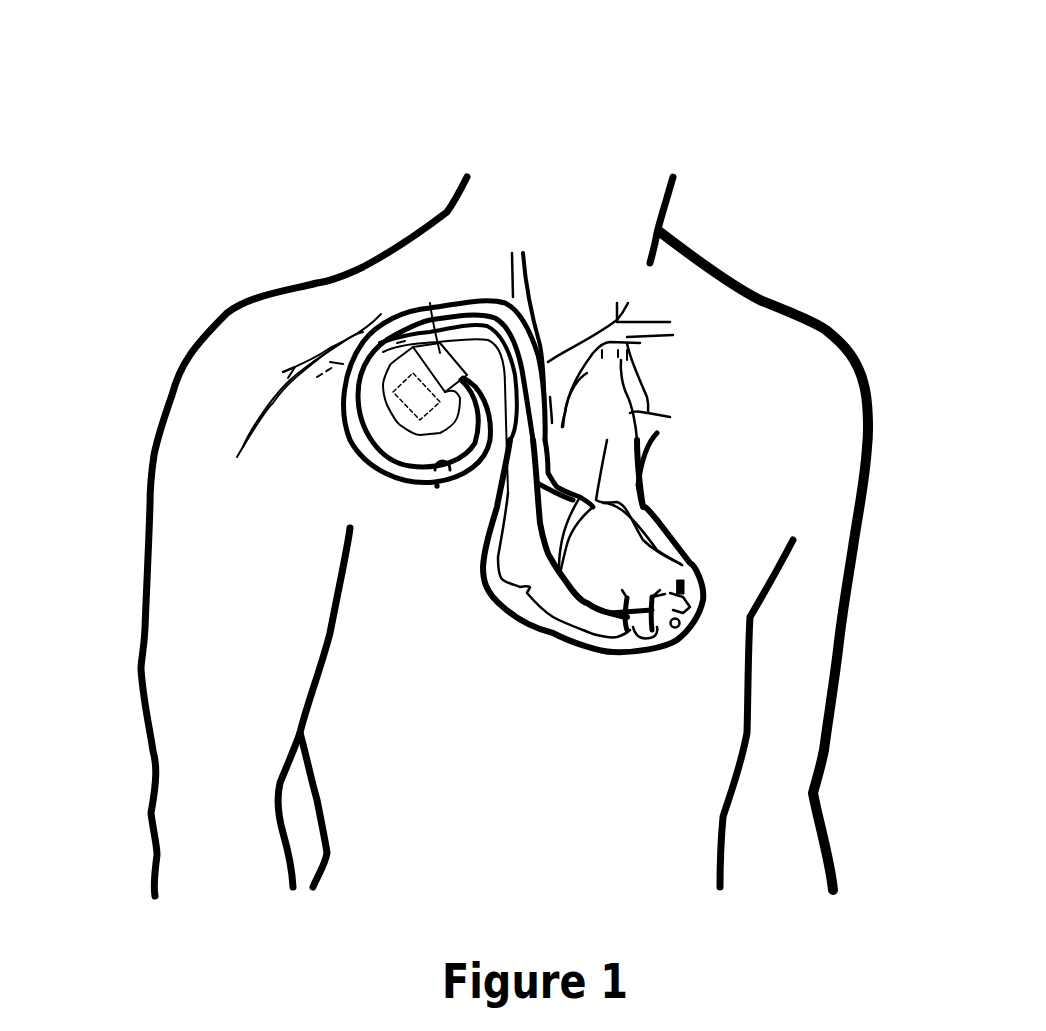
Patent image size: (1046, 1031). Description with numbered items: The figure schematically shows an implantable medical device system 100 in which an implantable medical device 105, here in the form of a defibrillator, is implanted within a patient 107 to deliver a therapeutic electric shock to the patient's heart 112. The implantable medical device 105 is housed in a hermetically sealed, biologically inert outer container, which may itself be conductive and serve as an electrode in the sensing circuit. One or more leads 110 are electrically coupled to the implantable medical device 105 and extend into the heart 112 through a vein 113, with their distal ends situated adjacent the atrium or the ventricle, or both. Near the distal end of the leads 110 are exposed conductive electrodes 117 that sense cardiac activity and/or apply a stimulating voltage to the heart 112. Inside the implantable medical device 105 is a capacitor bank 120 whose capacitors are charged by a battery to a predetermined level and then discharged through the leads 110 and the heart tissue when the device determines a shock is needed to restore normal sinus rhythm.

The implantable medical device system 100 is at (585, 138).
The implantable medical device 105 is at (397, 422).
The patient 107 is at (823, 333).
The leads 110 is at (440, 488).
The heart 112 is at (636, 652).
The vein 113 is at (355, 340).
The electrodes 117 is at (680, 580).
The capacitor bank 120 is at (395, 413).